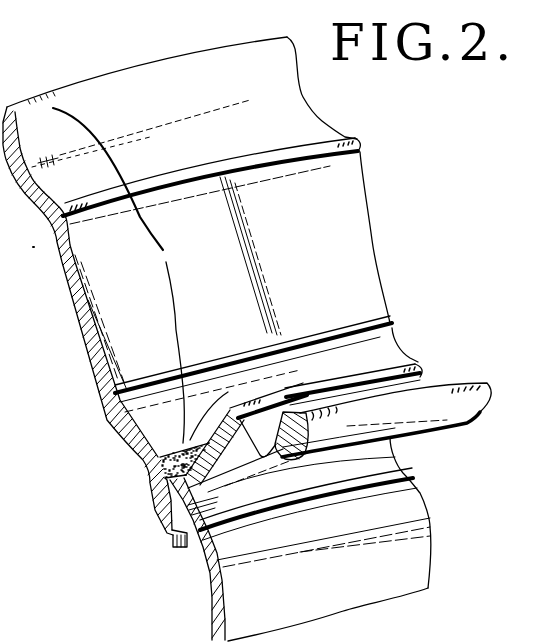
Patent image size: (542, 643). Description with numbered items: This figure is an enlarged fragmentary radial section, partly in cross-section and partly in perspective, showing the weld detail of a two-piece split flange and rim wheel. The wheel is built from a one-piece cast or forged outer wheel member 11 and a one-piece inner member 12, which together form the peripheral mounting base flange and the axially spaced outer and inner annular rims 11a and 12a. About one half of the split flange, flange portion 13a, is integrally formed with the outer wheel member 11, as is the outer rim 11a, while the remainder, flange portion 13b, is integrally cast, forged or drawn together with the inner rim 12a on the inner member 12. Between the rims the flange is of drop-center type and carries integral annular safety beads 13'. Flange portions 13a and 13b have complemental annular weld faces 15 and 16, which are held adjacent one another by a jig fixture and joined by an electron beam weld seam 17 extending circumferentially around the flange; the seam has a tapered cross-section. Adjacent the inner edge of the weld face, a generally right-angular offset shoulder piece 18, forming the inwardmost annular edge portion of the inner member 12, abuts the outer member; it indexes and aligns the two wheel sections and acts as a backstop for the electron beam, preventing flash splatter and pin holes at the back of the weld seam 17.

The outer wheel member 11 is at (250, 592).
The outer annular rim 11a is at (477, 383).
The inner member 12 is at (78, 342).
The inner annular rim 12a is at (128, 77).
The annular safety beads 13' is at (255, 267).
The flange portion 13a is at (283, 395).
The flange portion 13b is at (134, 275).
The weld face 15 is at (203, 491).
The weld face 16 is at (160, 490).
The electron beam weld seam 17 is at (160, 462).
The shoulder piece 18 is at (167, 538).